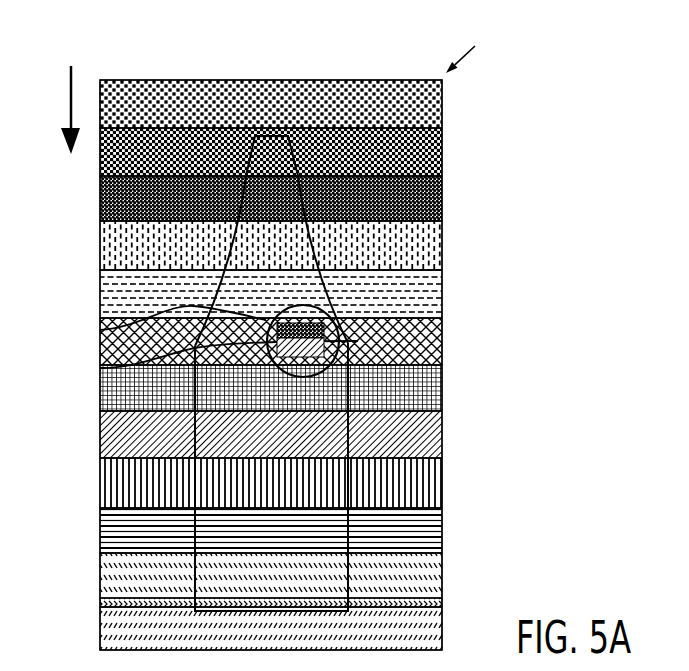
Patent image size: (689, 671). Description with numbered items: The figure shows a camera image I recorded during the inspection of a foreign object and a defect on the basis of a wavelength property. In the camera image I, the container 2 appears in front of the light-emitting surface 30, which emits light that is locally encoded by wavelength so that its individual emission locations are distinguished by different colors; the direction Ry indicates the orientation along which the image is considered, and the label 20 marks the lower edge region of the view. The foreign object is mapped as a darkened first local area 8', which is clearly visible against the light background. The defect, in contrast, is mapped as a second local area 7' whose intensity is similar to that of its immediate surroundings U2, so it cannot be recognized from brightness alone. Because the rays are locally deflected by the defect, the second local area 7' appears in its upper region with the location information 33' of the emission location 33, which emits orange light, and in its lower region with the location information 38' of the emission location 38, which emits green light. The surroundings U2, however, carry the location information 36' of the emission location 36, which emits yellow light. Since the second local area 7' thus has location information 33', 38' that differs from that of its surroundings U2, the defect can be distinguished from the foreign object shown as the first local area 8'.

The light-emitting surface 30 is at (383, 72).
The camera image I is at (464, 42).
The direction Ry is at (60, 86).
The container 2 is at (236, 192).
The emission location 33 is at (300, 198).
The surroundings U2 is at (305, 298).
The location information 33' is at (390, 312).
The emission location 36 is at (300, 341).
The location information 38' is at (390, 361).
The location information 36' is at (149, 324).
The second local area 7' is at (199, 361).
The emission location 38 is at (300, 434).
The first local area 8' is at (194, 477).
The substrate 20 is at (427, 670).